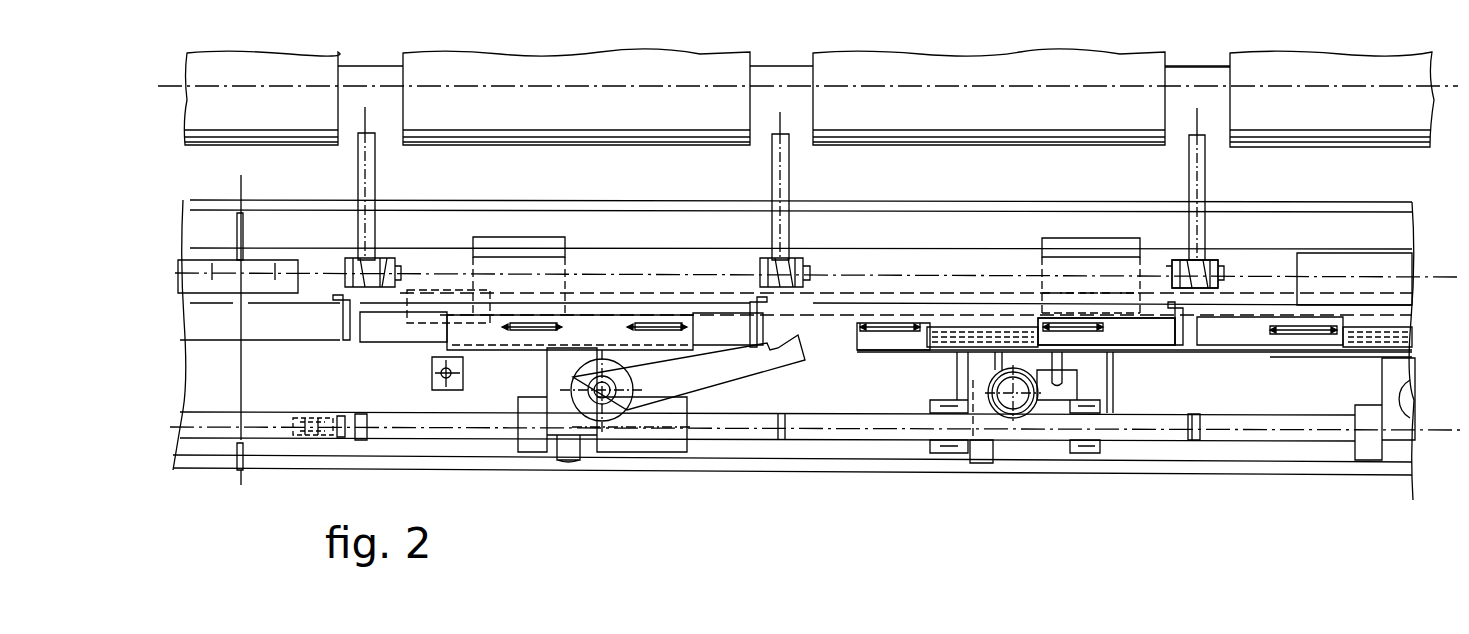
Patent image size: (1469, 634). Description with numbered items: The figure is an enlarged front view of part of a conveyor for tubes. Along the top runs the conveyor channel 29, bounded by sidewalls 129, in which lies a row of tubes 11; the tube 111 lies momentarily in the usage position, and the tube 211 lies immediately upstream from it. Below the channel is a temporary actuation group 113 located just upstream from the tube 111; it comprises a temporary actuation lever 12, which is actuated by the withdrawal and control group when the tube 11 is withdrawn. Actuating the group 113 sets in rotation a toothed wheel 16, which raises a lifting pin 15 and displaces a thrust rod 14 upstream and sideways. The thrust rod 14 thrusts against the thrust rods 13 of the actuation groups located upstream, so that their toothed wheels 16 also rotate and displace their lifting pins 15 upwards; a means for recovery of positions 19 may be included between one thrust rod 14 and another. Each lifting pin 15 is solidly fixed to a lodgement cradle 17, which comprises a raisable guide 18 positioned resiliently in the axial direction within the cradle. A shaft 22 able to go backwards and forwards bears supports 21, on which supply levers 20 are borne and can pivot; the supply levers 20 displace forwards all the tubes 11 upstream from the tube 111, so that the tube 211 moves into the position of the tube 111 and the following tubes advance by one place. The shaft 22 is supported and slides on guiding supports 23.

The tube 11 is at (438, 118).
The tube immediately upstream from the usage-position tube 211 is at (1005, 112).
The tube in the usage position 111 is at (1318, 120).
The sidewall of the conveyor channel 129 is at (1188, 80).
The conveyor channel 29 is at (778, 105).
The supply lever 20 is at (1200, 180).
The support 21 is at (1218, 272).
The shaft able to go backwards and forwards 22 is at (1287, 278).
The guiding support 23 is at (1072, 250).
The means for recovery of positions 19 is at (345, 437).
The thrust rod of an upstream temporary actuation group 13 is at (550, 472).
The temporary actuation lever 12 is at (712, 373).
The thrust rod 14 is at (870, 427).
The temporary actuation group 113 is at (967, 478).
The lifting pin 15 is at (987, 447).
The toothed wheel 16 is at (1020, 397).
The lodgement cradle 17 is at (1107, 343).
The raisable guide 18 is at (1183, 343).